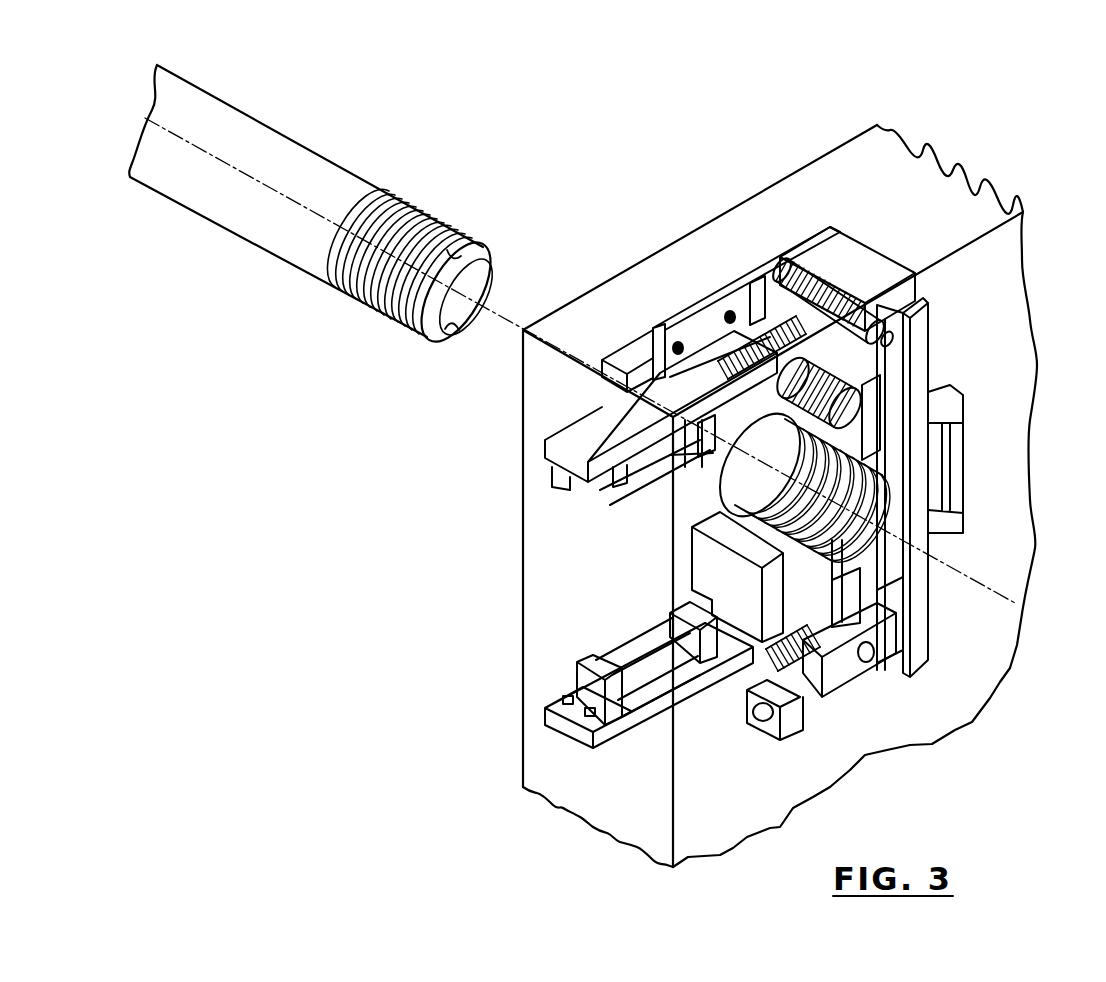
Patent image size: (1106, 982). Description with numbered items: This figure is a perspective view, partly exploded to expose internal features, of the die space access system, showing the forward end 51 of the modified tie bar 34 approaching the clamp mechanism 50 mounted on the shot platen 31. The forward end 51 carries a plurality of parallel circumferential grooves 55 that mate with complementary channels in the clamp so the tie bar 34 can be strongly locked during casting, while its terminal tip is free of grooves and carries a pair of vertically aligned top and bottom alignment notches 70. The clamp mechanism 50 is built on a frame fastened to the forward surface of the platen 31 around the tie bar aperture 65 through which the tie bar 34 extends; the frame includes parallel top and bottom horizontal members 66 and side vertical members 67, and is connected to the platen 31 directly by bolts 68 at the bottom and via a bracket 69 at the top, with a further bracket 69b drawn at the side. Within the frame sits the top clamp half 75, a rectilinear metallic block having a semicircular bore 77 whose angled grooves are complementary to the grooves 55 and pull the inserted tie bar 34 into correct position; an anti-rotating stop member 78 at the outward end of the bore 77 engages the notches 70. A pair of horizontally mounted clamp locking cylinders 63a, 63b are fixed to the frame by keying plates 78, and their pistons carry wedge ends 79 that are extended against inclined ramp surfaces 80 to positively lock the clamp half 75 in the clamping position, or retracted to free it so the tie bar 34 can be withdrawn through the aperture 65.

The platen 31 is at (732, 218).
The tie bar 34 is at (305, 165).
The clamp mechanism 50 is at (756, 486).
The forward end 51 is at (321, 232).
The circumferential grooves 55 is at (368, 313).
The clamp locking cylinder 63a is at (576, 528).
The clamp locking cylinder 63b is at (638, 745).
The tie bar aperture 65 is at (727, 487).
The horizontal members 66 is at (848, 253).
The side vertical members 67 is at (920, 650).
The bolts 68 is at (766, 722).
The bracket 69 is at (843, 298).
The guide bracket 69b is at (963, 458).
The alignment notches 70 is at (462, 340).
The top clamp half 75 is at (712, 572).
The semicircular bore 77 is at (762, 495).
The anti-rotating stop member 78 is at (592, 732).
The wedge end 79 is at (712, 392).
The inclined ramp surfaces 80 is at (860, 357).